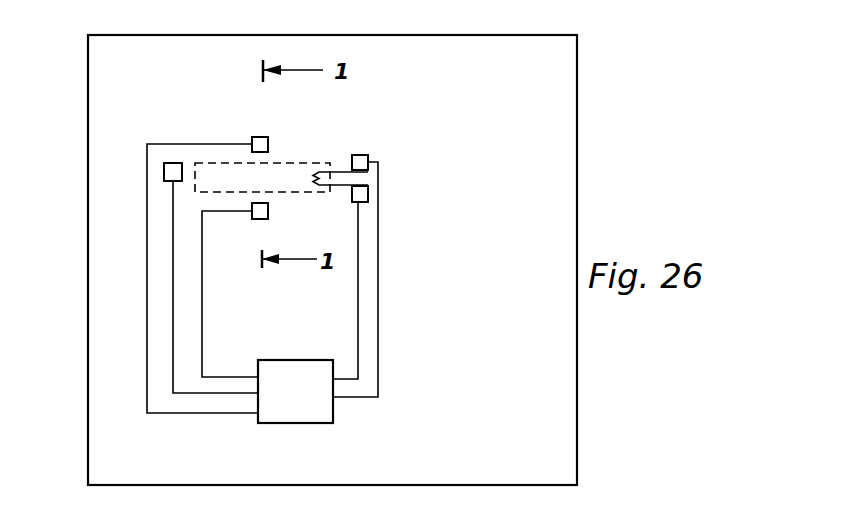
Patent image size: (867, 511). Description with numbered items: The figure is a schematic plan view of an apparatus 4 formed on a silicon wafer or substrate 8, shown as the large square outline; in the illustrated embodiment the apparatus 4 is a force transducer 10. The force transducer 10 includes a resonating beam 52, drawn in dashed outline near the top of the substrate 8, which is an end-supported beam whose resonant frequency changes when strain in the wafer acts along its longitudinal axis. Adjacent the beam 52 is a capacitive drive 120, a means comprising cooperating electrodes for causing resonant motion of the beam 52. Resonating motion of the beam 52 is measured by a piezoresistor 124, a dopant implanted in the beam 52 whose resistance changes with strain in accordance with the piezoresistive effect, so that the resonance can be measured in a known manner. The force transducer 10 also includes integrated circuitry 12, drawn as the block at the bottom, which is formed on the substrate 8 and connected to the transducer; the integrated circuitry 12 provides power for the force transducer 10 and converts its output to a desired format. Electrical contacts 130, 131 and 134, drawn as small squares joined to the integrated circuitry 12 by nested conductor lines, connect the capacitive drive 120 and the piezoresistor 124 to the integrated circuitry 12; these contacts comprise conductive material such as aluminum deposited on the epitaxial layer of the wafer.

The silicon wafer or substrate 8 is at (553, 63).
The apparatus 4 is at (610, 155).
The force transducer 10 is at (392, 268).
The integrated circuitry 12 is at (307, 407).
The beam 52 is at (296, 160).
The capacitive drive 120 is at (265, 120).
The piezoresistor 124 is at (392, 156).
The electrical contact 130 is at (252, 142).
The electrical contact 131 is at (268, 211).
The electrical contact 134 is at (164, 172).